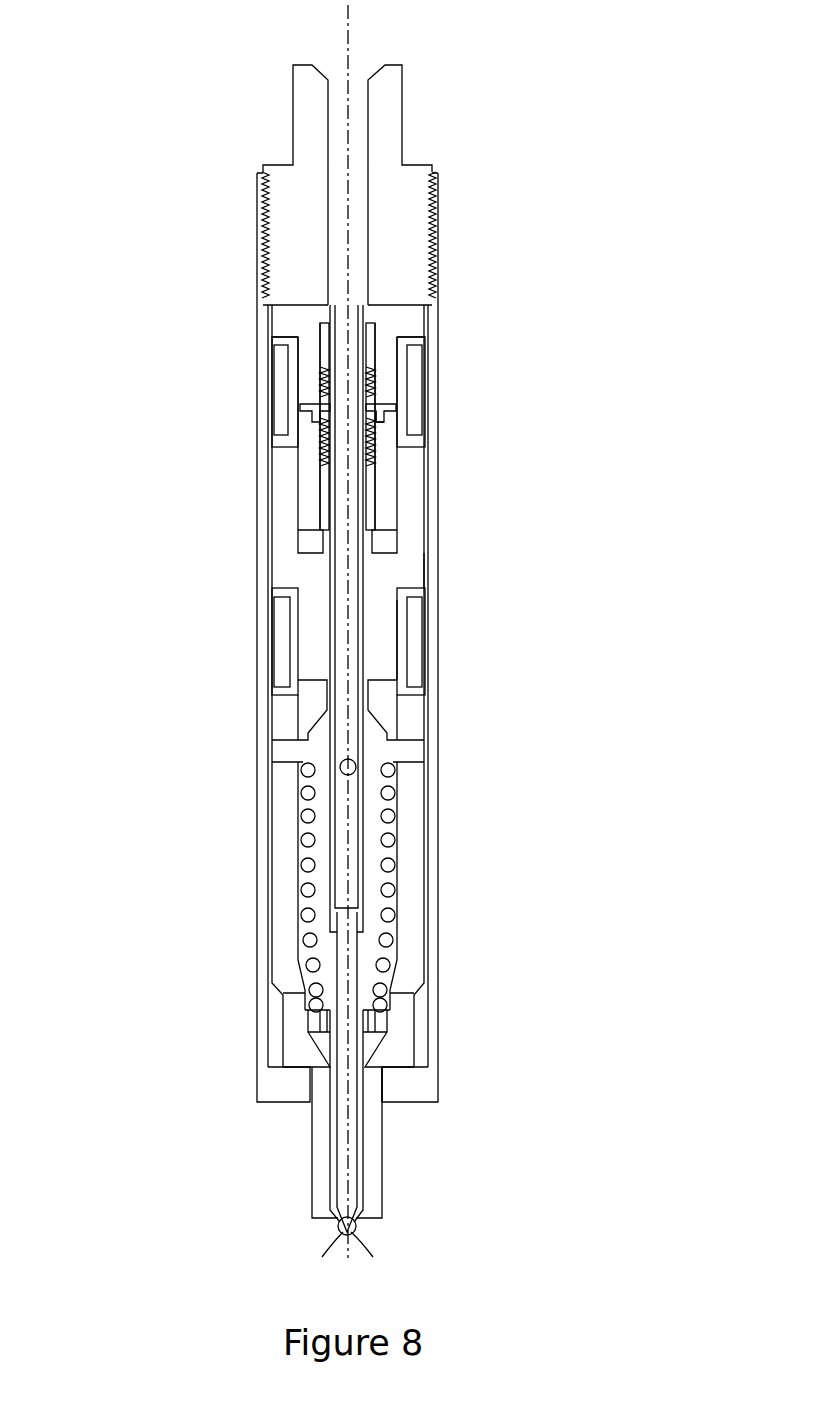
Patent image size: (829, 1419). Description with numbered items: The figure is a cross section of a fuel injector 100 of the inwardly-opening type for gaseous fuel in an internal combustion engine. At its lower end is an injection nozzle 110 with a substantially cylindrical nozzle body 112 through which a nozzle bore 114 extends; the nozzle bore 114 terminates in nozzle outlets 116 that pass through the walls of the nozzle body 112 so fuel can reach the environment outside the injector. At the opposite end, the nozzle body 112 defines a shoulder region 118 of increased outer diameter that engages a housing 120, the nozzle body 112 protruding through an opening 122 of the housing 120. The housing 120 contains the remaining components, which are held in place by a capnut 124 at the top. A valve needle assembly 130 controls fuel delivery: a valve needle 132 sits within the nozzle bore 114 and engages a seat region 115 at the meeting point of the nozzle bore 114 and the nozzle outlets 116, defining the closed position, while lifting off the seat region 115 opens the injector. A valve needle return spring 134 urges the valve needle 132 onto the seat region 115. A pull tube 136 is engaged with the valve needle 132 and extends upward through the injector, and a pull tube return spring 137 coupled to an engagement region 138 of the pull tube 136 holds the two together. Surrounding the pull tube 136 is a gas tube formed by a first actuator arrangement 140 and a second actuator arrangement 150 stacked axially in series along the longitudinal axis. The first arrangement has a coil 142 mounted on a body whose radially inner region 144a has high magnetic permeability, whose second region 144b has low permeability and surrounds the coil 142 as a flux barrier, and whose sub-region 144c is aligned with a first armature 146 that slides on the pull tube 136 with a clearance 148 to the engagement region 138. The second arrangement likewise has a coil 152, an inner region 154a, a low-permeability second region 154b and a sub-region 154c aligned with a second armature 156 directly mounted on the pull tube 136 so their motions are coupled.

The fuel injector 100 is at (652, 515).
The injection nozzle 110 is at (518, 1113).
The nozzle body 112 is at (320, 1153).
The nozzle bore 114 is at (364, 1157).
The seat region 115 is at (358, 1218).
The nozzle outlets 116 is at (354, 1258).
The shoulder region 118 is at (403, 1038).
The housing 120 is at (264, 1075).
The opening 122 is at (384, 1088).
The capnut 124 is at (388, 104).
The valve needle assembly 130 is at (232, 930).
The valve needle 132 is at (354, 975).
The valve needle return spring 134 is at (306, 813).
The pull tube 136 is at (364, 853).
The pull tube return spring 137 is at (320, 461).
The engagement region 138 is at (303, 410).
The first actuator arrangement 140 is at (472, 375).
The coil 142 is at (280, 362).
The radially inner region 144a is at (300, 320).
The second region 144b is at (438, 411).
The sub-region 144c is at (383, 382).
The first armature 146 is at (306, 503).
The clearance 148 is at (374, 424).
The second actuator arrangement 150 is at (240, 648).
The coil 152 is at (276, 677).
The radially inner region 154a is at (394, 573).
The second region 154b is at (402, 683).
The sub-region 154c is at (384, 637).
The second armature 156 is at (310, 705).